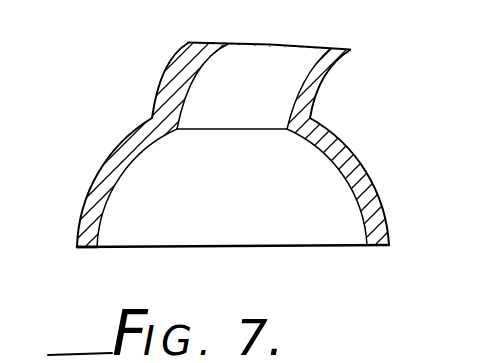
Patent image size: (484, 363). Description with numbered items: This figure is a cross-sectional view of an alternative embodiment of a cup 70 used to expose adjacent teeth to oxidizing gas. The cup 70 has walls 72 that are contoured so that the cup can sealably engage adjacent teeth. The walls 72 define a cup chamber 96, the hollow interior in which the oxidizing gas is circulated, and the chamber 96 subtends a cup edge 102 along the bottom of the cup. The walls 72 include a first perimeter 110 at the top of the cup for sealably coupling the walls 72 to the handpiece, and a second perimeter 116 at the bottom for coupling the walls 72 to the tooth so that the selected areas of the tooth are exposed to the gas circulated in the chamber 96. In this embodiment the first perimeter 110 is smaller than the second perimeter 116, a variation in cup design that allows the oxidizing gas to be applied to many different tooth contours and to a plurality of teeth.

The cup 70 is at (396, 175).
The walls 72 is at (84, 208).
The cup chamber 96 is at (242, 201).
The cup edge 102 is at (247, 247).
The first perimeter 110 is at (340, 45).
The second perimeter 116 is at (85, 252).